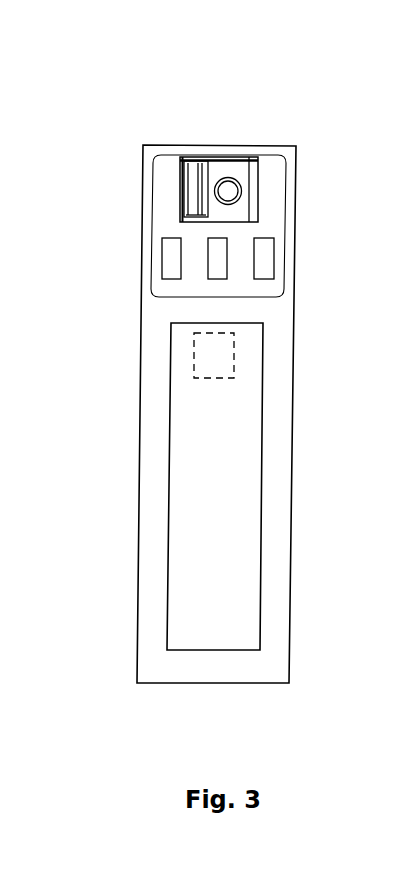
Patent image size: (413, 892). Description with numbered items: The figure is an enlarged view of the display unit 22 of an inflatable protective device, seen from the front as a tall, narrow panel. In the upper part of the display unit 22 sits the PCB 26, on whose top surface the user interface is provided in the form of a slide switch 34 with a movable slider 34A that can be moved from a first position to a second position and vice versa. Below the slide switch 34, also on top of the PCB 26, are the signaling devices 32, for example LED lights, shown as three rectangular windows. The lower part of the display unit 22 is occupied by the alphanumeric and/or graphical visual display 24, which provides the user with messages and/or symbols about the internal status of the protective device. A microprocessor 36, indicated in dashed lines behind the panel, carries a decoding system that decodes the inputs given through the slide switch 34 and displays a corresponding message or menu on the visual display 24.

The display unit 22 is at (92, 130).
The visual display 24 is at (253, 509).
The PCB 26 is at (183, 314).
The signaling device 32 is at (260, 257).
The slide switch 34 is at (257, 175).
The movable slider 34A is at (200, 168).
The microprocessor 36 is at (220, 355).